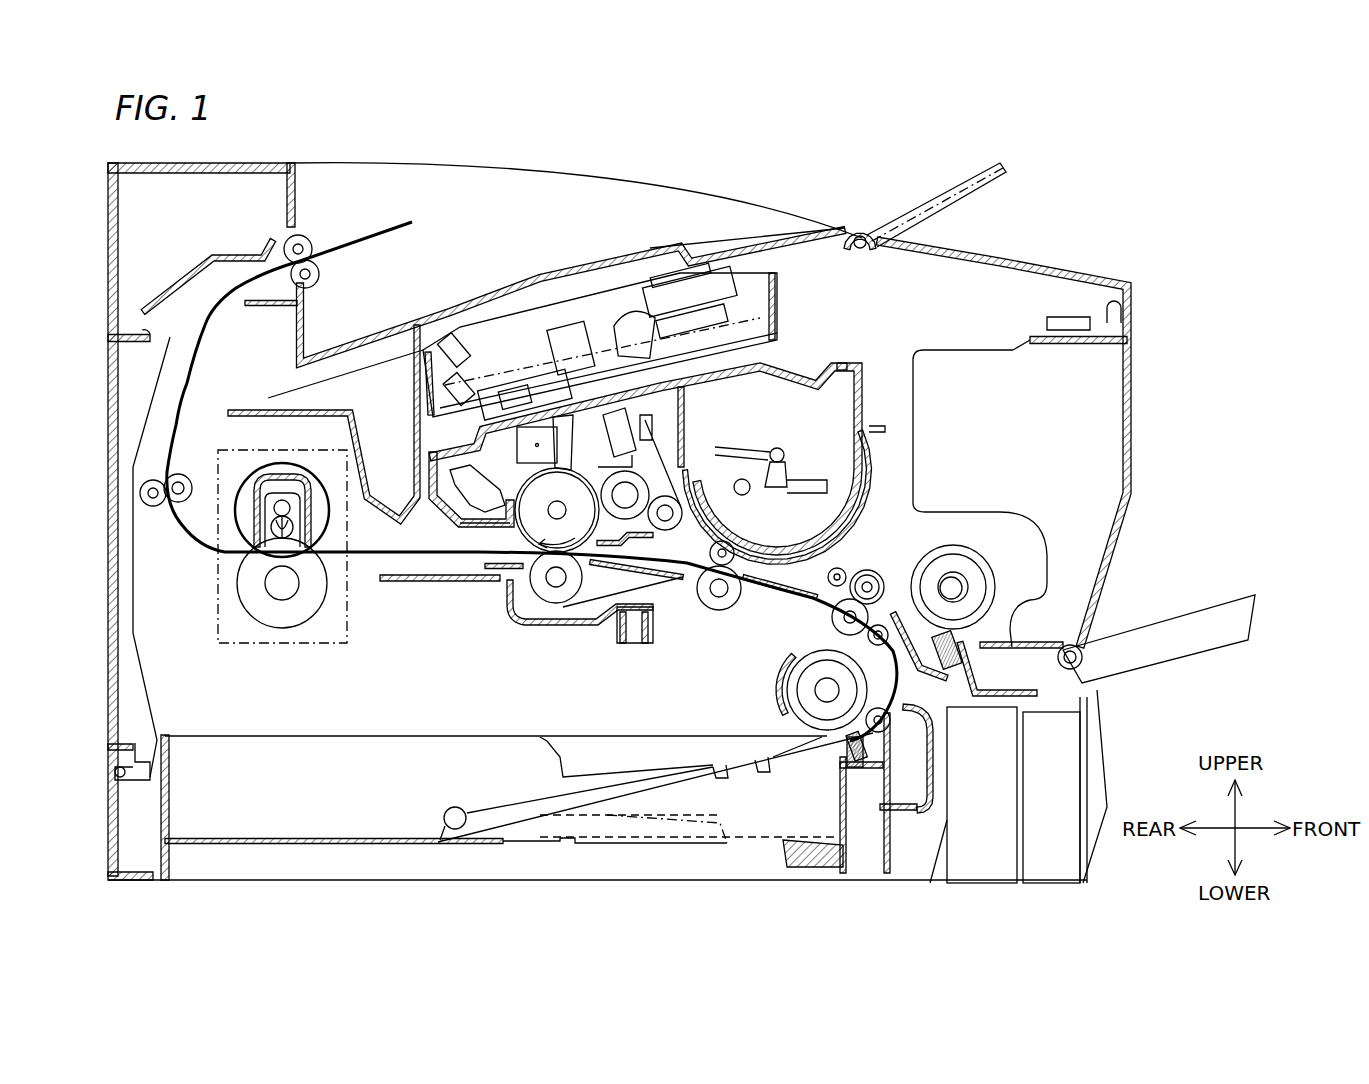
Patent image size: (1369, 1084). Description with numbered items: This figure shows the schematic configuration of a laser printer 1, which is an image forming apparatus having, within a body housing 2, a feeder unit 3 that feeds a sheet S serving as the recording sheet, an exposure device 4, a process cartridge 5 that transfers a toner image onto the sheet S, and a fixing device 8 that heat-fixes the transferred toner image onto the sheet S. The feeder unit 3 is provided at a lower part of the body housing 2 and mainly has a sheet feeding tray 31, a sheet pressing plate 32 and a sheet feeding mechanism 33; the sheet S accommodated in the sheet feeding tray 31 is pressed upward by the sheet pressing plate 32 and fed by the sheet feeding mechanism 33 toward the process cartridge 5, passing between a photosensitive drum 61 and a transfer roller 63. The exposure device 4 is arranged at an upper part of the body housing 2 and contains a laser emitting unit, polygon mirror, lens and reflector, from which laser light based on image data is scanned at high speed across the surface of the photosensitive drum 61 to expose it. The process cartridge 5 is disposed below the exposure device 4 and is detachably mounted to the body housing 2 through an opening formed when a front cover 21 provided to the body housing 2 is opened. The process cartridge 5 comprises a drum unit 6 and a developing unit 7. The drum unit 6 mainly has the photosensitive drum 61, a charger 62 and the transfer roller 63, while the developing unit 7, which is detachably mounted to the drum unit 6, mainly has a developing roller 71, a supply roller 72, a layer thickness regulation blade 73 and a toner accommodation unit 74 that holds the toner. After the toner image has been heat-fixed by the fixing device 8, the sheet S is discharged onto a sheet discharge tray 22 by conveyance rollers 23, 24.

The laser printer 1 is at (1100, 185).
The body housing 2 is at (1030, 265).
The front cover 21 is at (1133, 406).
The sheet discharge tray 22 is at (478, 290).
The conveyance roller 23 is at (178, 503).
The conveyance roller 24 is at (310, 242).
The feeder unit 3 is at (210, 728).
The sheet feeding tray 31 is at (162, 797).
The sheet pressing plate 32 is at (525, 792).
The sheet feeding mechanism 33 is at (775, 666).
The exposure device 4 is at (538, 305).
The process cartridge 5 is at (835, 340).
The drum unit 6 is at (432, 517).
The photosensitive drum 61 is at (510, 527).
The charger 62 is at (557, 510).
The transfer roller 63 is at (565, 592).
The developing unit 7 is at (875, 357).
The developing roller 71 is at (616, 437).
The supply roller 72 is at (680, 490).
The layer thickness regulation blade 73 is at (662, 460).
The toner accommodation unit 74 is at (843, 429).
The fixing device 8 is at (355, 640).
The sheet S is at (406, 222).